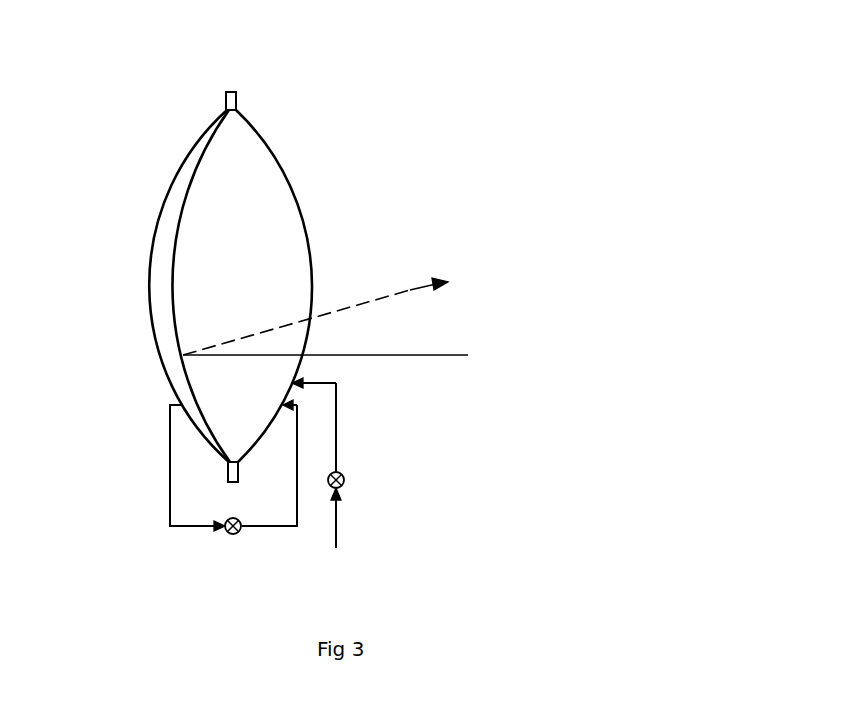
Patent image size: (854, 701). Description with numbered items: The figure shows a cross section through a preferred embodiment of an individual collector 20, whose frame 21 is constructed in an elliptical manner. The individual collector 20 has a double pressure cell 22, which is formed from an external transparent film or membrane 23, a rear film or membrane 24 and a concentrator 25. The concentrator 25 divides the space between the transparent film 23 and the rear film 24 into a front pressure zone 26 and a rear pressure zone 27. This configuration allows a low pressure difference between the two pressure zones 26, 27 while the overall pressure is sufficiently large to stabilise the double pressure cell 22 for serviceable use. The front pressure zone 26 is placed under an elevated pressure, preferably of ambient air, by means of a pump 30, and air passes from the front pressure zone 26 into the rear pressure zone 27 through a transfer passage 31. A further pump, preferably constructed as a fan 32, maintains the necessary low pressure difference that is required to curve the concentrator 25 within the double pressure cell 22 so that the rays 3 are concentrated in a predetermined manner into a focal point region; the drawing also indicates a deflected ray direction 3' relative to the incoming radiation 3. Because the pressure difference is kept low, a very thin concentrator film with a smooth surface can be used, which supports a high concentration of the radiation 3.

The individual collector 20 is at (298, 68).
The frame 21 is at (236, 103).
The double pressure cell 22 is at (187, 123).
The external transparent film 23 is at (300, 180).
The rear film 24 is at (152, 254).
The concentrator 25 is at (173, 288).
The front pressure zone 26 is at (225, 238).
The rear pressure zone 27 is at (170, 218).
The rays 3 is at (353, 372).
The deflected optical axis 3' is at (355, 294).
The pump 30 is at (344, 480).
The transfer passage 31 is at (170, 512).
The fan 32 is at (233, 534).